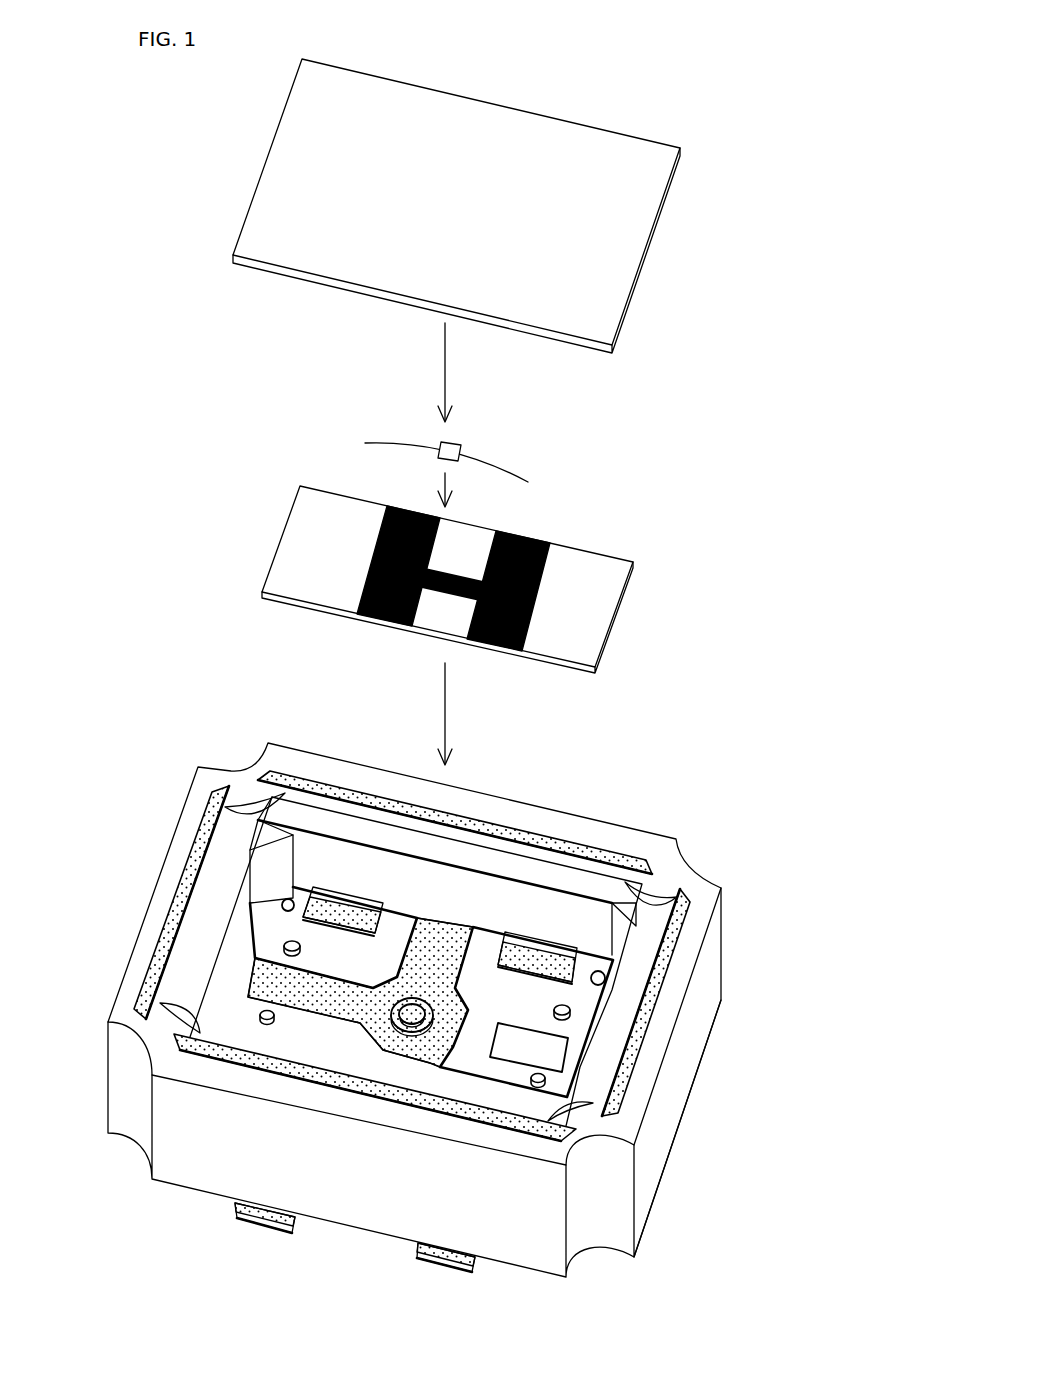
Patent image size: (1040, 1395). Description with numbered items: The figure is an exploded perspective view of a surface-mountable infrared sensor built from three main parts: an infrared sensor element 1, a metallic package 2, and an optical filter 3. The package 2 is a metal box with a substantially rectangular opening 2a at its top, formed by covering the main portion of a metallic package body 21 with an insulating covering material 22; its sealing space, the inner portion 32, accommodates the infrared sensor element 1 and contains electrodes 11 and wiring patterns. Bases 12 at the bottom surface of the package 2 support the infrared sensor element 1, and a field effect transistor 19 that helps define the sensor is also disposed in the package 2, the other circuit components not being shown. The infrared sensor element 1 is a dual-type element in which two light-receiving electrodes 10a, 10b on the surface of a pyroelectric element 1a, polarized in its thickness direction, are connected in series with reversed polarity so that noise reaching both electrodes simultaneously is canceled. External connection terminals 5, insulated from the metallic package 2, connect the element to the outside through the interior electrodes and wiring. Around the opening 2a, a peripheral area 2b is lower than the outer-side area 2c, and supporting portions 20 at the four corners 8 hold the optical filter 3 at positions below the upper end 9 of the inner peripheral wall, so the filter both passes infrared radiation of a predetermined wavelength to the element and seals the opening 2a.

The infrared sensor element 1 is at (439, 548).
The pyroelectric element 1a is at (322, 489).
The metallic package 2 is at (416, 990).
The opening 2a is at (560, 893).
The peripheral area 2b is at (645, 944).
The outer-side area 2c is at (202, 795).
The optical filter 3 is at (663, 223).
The external connection terminals 5 is at (260, 1228).
The corners 8 is at (275, 840).
The upper end of the inner peripheral wall 9 is at (394, 846).
The light-receiving electrode 10a is at (362, 578).
The light-receiving electrode 10b is at (532, 612).
The electrodes 11 is at (342, 907).
The bases 12 is at (284, 947).
The field effect transistor 19 is at (463, 450).
The supporting portions 20 is at (283, 800).
The metallic package body 21 is at (684, 889).
The insulating covering material 22 is at (472, 883).
The inner portion (sealing space) 32 is at (592, 997).